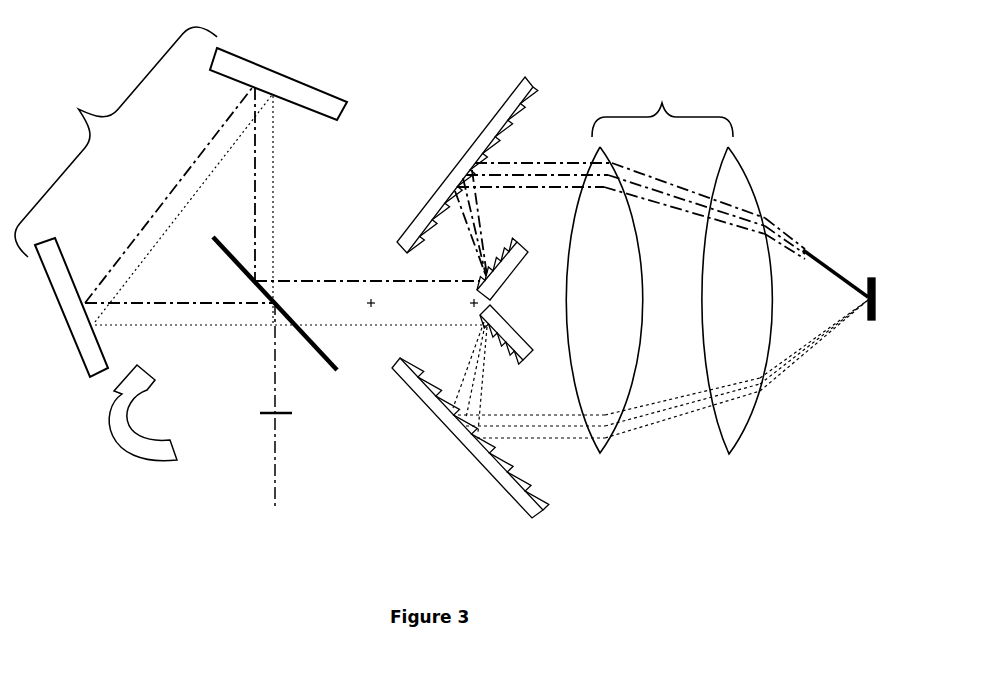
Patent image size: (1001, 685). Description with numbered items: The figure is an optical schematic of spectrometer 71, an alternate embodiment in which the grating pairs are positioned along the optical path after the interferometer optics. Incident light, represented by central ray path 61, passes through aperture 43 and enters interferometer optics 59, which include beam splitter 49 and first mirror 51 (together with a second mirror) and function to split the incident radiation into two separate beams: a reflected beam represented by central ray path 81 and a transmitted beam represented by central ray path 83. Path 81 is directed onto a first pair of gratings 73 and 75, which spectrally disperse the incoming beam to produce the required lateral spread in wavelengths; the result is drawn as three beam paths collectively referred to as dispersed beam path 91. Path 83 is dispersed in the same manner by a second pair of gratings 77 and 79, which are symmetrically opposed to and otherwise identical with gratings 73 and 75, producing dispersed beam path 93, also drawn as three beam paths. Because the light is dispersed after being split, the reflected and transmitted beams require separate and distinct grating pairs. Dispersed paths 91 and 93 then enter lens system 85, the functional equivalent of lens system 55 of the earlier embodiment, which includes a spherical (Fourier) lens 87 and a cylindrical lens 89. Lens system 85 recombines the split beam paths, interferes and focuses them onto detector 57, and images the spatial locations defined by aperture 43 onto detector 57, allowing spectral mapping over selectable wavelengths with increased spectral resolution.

The aperture 43 is at (272, 408).
The beam splitter 49 is at (216, 236).
The first mirror 51 is at (71, 307).
The lens system 55 is at (278, 84).
The detector 57 is at (871, 276).
The interferometer optics 59 is at (108, 128).
The central ray path 61 is at (272, 479).
The spectrometer 71 is at (156, 413).
The grating 73 is at (522, 258).
The grating 75 is at (452, 170).
The grating 77 is at (521, 333).
The grating 79 is at (455, 448).
The central ray path 81 is at (172, 298).
The central ray path 83 is at (277, 186).
The lens system 85 is at (662, 107).
The spherical lens 87 is at (604, 300).
The cylindrical lens 89 is at (737, 300).
The dispersed beam path 91 is at (553, 184).
The dispersed beam path 93 is at (552, 413).